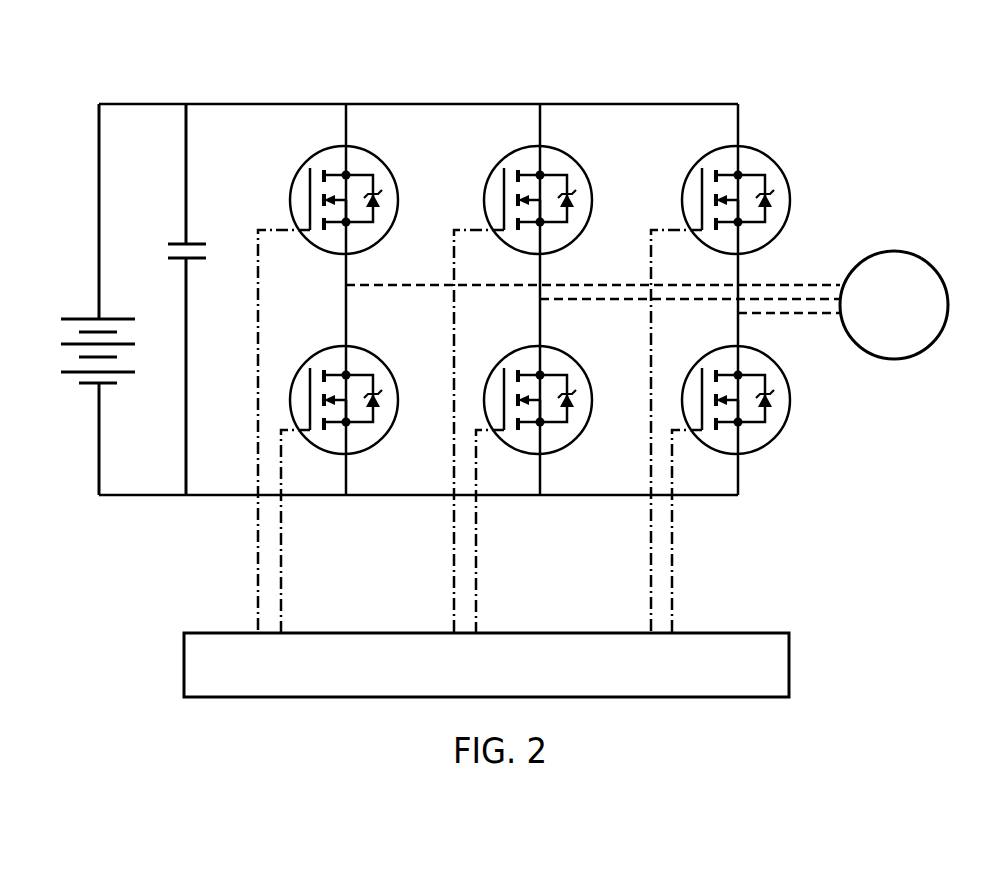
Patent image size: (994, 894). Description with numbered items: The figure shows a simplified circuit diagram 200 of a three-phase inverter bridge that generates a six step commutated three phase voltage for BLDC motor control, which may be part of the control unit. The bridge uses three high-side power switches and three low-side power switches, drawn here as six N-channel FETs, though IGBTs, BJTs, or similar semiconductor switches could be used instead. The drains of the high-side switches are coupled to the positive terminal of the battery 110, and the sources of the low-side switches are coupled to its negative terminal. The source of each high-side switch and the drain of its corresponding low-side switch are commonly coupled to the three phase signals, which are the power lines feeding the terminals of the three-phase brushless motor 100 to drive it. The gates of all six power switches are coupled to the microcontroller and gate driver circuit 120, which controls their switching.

The circuit diagram 200 is at (139, 33).
The three-phase brushless motor 100 is at (892, 251).
The battery 110 is at (70, 375).
The microcontroller and gate driver circuit 120 is at (789, 662).